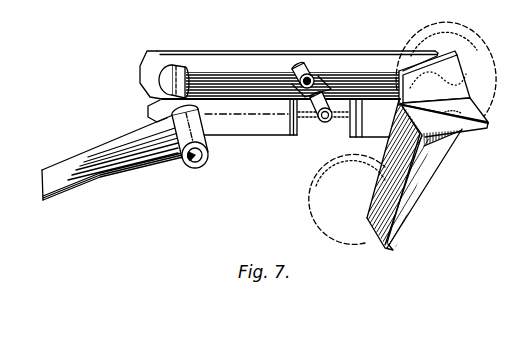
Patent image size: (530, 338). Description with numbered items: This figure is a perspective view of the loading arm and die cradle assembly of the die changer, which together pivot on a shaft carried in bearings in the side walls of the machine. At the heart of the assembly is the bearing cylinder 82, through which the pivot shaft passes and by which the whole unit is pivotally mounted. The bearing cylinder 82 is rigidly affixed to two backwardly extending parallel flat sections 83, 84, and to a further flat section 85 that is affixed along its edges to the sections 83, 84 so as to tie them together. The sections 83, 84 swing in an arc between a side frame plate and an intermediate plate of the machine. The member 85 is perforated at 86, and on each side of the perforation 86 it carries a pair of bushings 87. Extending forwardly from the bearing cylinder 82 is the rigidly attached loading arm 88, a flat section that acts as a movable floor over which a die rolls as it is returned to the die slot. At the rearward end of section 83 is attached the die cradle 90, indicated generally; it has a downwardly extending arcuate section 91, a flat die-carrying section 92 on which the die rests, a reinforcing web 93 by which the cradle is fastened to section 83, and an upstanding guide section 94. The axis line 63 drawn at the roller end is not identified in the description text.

The axis of roller 63 is at (208, 147).
The bearing cylinder 82 is at (180, 70).
The flat section 83 is at (250, 104).
The flat section 84 is at (246, 49).
The flat section 85 is at (260, 82).
The perforation 86 is at (331, 82).
The bushings 87 is at (302, 64).
The loading arm 88 is at (90, 162).
The die cradle 90 is at (398, 141).
The arcuate section 91 is at (387, 192).
The die-carrying section 92 is at (470, 118).
The reinforcing web 93 is at (432, 162).
The guide section 94 is at (453, 69).